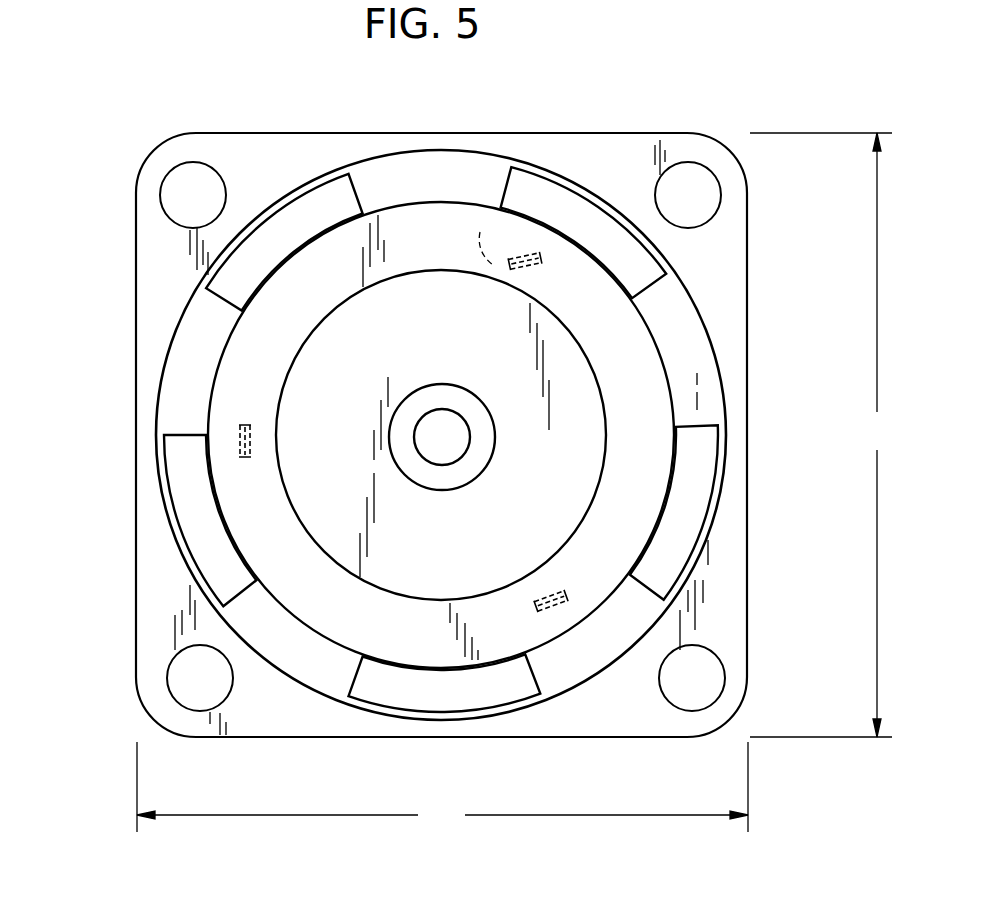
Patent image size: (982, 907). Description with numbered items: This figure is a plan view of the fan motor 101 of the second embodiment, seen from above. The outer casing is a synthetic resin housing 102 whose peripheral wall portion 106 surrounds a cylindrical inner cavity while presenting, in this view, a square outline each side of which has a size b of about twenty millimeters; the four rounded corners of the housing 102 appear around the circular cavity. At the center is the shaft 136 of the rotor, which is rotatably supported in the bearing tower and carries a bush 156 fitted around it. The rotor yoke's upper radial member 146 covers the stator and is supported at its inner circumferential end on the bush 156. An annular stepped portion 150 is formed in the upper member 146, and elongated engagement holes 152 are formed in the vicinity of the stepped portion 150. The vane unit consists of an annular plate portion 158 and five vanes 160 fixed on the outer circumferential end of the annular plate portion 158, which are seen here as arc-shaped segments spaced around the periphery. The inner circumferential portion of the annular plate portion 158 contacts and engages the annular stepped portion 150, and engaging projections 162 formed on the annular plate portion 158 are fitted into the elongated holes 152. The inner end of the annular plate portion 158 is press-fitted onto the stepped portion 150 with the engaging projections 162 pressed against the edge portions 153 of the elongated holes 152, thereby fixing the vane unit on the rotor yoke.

The fan motor 101 is at (48, 110).
The housing 102 is at (135, 245).
The peripheral wall portion 106 is at (728, 582).
The shaft 136 is at (430, 445).
The upper radial member 146 is at (397, 327).
The annular stepped portion 150 is at (607, 410).
The elongated engagement holes 152 is at (503, 263).
The edge portions 153 is at (553, 607).
The bush 156 is at (408, 412).
The annular plate portion 158 is at (632, 361).
The vanes 160 is at (690, 497).
The engaging projections 162 is at (540, 247).